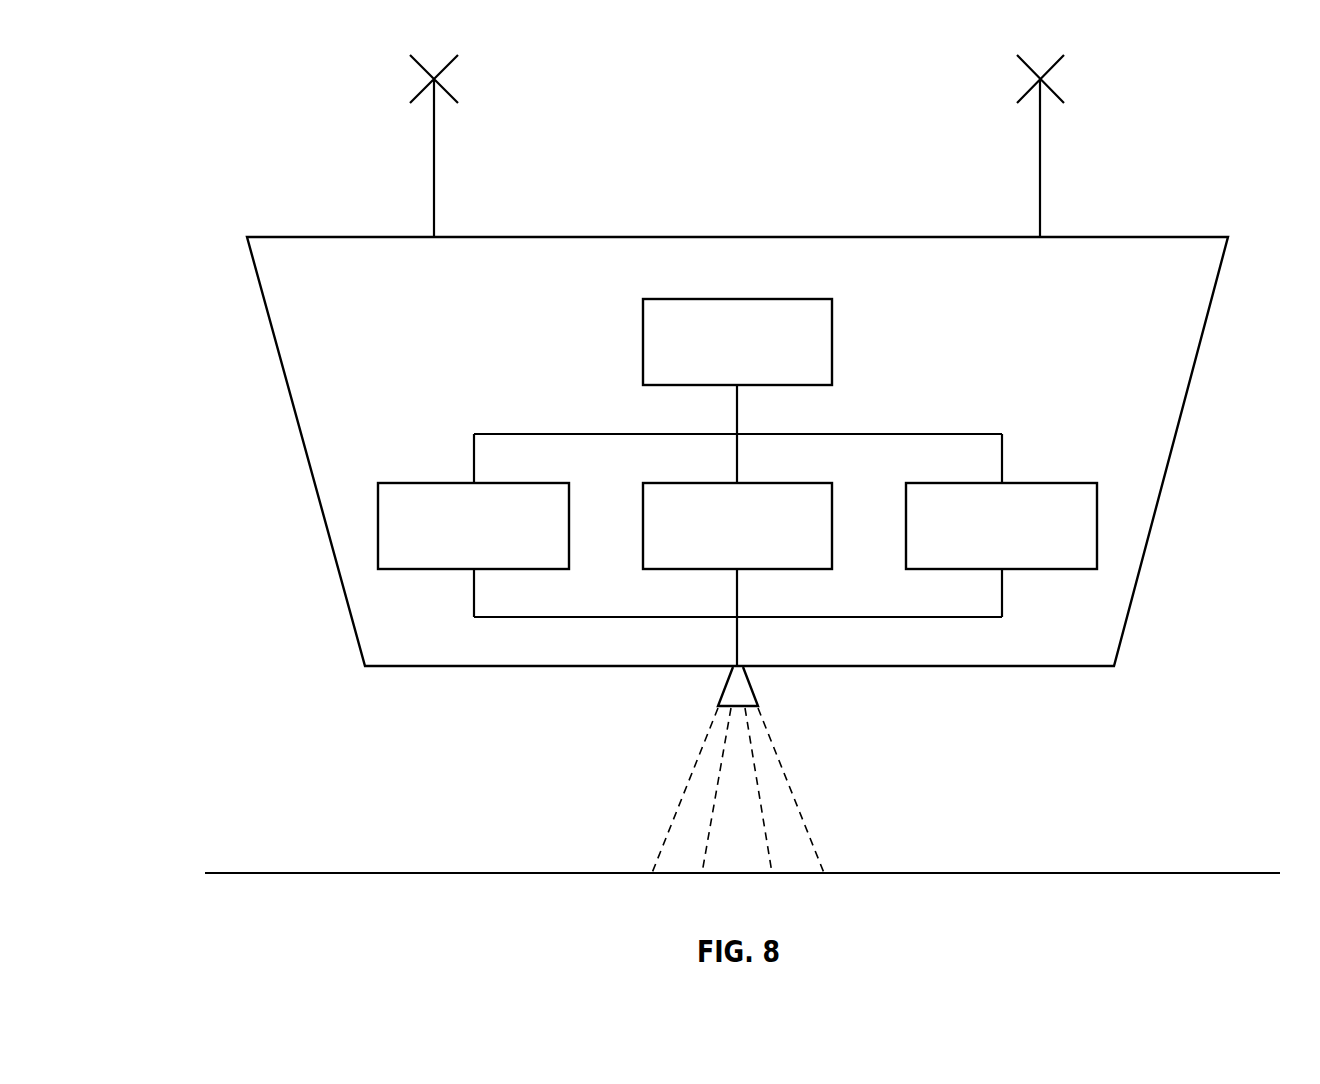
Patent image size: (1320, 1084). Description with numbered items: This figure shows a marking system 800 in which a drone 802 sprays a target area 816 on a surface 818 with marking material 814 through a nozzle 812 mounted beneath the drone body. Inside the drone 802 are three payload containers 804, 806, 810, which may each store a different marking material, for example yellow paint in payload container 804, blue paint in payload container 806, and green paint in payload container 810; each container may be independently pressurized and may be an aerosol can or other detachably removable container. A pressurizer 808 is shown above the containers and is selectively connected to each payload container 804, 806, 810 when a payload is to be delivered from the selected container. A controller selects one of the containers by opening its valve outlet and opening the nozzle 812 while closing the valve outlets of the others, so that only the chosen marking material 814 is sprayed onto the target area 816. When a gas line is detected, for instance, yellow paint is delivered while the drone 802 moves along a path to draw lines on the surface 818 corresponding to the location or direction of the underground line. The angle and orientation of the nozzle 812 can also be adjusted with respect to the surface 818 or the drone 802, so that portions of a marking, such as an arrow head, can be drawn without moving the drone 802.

The marking system 800 is at (221, 83).
The drone 802 is at (313, 237).
The payload container 804 is at (447, 482).
The payload container 806 is at (710, 482).
The pressurizer 808 is at (710, 298).
The payload container 810 is at (975, 482).
The nozzle 812 is at (756, 699).
The marking material 814 is at (790, 776).
The target area 816 is at (735, 881).
The surface 818 is at (1033, 872).